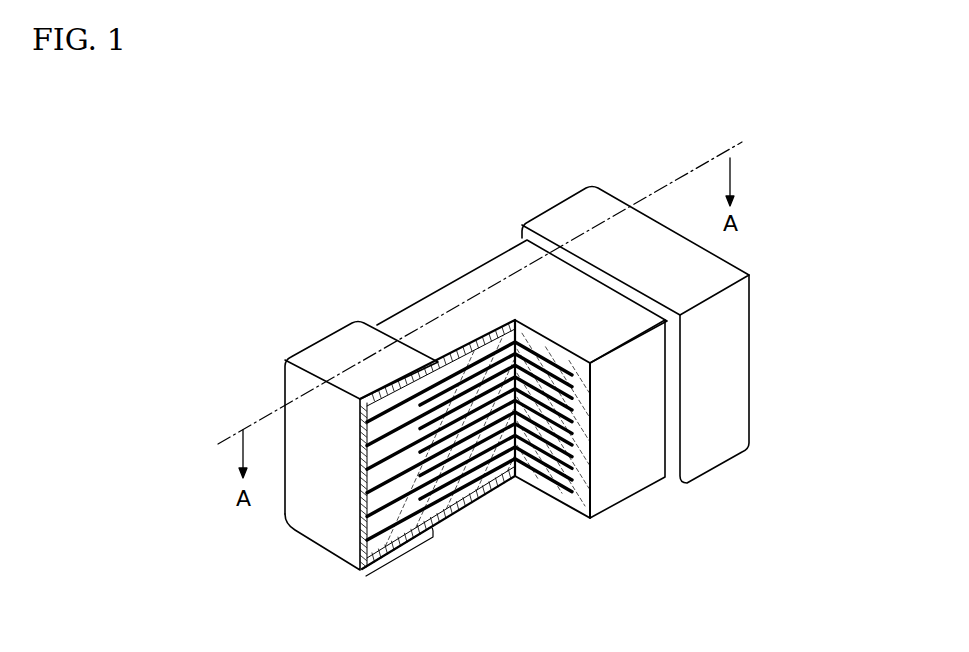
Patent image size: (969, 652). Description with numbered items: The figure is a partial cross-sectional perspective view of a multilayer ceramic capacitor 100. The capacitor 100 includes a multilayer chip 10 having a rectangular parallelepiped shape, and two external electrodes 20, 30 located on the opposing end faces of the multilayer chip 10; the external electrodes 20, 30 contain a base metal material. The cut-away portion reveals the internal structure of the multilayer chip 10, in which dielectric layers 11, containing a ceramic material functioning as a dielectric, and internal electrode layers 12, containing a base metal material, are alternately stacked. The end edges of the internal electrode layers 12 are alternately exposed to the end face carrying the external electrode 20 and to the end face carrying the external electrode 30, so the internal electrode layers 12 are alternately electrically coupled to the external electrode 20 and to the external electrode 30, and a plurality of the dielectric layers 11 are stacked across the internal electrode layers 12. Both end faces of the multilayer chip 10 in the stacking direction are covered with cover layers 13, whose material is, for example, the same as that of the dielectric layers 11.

The multilayer ceramic capacitor 100 is at (831, 134).
The multilayer chip 10 is at (402, 304).
The dielectric layer 11 is at (452, 486).
The internal electrode layer 12 is at (432, 505).
The cover layer 13 is at (490, 272).
The external electrode 20 is at (331, 335).
The external electrode 30 is at (558, 217).